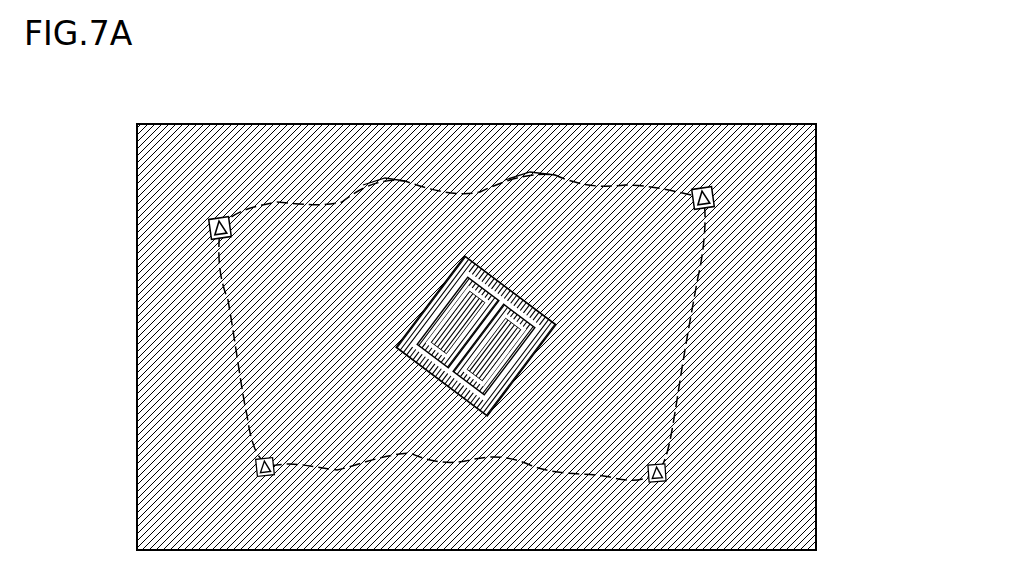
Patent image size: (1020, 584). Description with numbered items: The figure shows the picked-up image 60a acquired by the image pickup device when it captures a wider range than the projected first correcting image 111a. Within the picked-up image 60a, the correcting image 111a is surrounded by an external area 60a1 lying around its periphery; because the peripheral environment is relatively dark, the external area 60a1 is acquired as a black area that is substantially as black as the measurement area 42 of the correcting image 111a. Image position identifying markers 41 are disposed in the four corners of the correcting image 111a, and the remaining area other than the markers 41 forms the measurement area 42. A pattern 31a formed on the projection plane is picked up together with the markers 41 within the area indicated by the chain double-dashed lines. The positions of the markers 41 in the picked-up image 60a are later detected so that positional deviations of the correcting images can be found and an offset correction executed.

The picked-up image 60a is at (822, 114).
The external area 60a1 is at (228, 160).
The correcting image 111a is at (393, 180).
The measurement area 42 is at (530, 207).
The pattern 31a is at (540, 310).
The image position identifying markers 41 is at (210, 234).